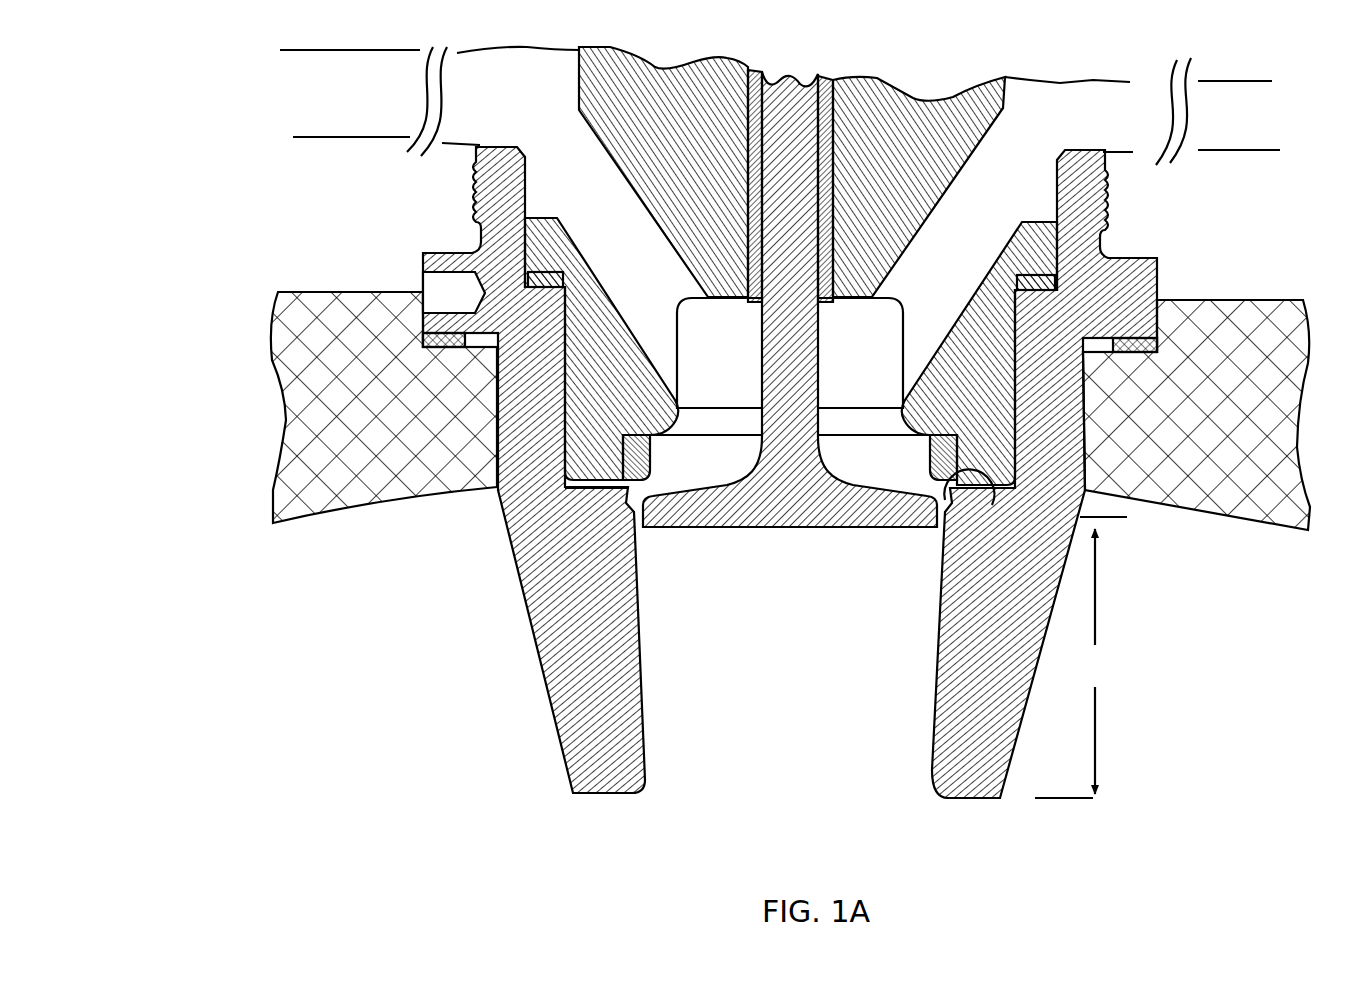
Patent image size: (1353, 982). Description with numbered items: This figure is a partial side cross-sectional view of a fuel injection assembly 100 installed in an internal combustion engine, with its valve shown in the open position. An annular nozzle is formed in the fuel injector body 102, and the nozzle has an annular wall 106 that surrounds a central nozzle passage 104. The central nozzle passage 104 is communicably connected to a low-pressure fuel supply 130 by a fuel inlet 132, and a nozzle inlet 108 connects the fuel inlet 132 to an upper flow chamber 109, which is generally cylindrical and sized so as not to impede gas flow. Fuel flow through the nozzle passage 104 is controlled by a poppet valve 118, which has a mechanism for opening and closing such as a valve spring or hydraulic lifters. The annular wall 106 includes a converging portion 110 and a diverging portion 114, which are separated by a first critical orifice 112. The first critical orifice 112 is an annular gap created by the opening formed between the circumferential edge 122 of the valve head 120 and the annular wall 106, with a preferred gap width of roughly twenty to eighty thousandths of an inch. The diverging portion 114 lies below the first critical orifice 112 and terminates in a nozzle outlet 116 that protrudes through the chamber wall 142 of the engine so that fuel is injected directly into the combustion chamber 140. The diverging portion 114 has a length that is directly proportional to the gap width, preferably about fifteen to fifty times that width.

The fuel injection assembly 100 is at (170, 417).
The fuel injector body 102 is at (629, 401).
The central nozzle passage 104 is at (772, 574).
The annular wall 106 is at (678, 424).
The nozzle inlet 108 is at (672, 308).
The upper flow chamber 109 is at (737, 383).
The converging portion 110 is at (695, 483).
The first critical orifice 112 is at (639, 534).
The diverging portion 114 is at (966, 502).
The nozzle outlet 116 is at (672, 796).
The poppet valve 118 is at (807, 333).
The valve head 120 is at (808, 516).
The circumferential edge 122 is at (929, 517).
The low-pressure fuel supply 130 is at (330, 108).
The fuel inlet 132 is at (505, 113).
The combustion chamber 140 is at (418, 678).
The chamber wall 142 is at (403, 413).